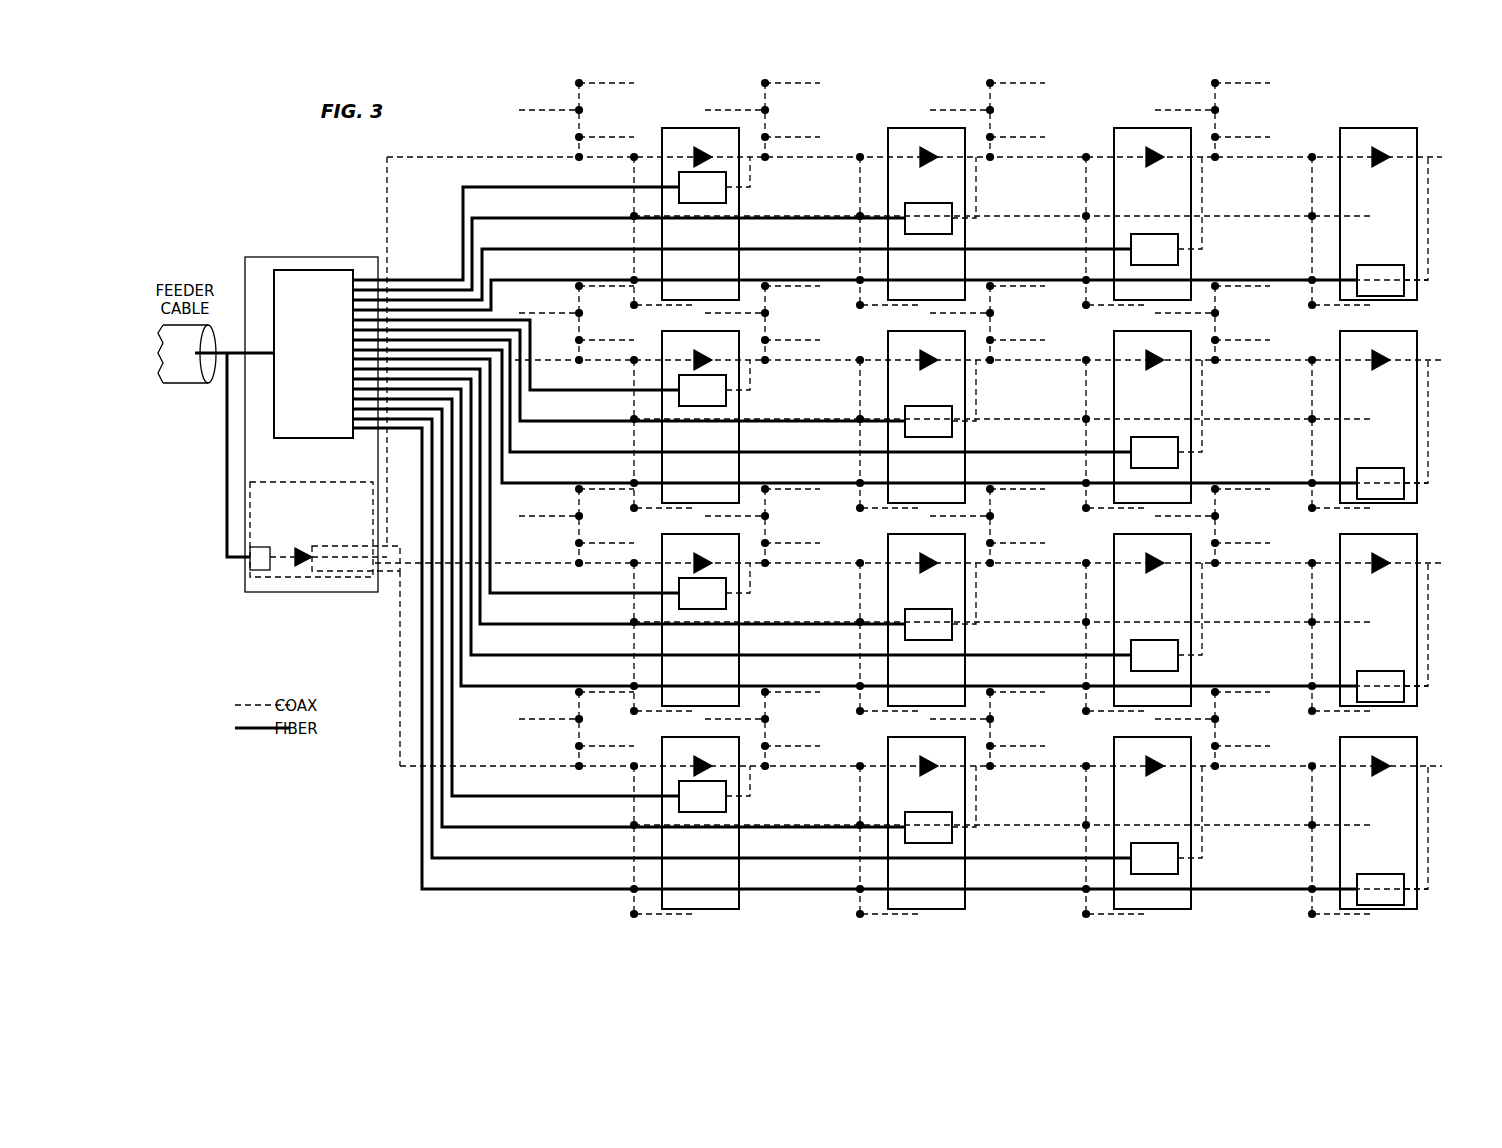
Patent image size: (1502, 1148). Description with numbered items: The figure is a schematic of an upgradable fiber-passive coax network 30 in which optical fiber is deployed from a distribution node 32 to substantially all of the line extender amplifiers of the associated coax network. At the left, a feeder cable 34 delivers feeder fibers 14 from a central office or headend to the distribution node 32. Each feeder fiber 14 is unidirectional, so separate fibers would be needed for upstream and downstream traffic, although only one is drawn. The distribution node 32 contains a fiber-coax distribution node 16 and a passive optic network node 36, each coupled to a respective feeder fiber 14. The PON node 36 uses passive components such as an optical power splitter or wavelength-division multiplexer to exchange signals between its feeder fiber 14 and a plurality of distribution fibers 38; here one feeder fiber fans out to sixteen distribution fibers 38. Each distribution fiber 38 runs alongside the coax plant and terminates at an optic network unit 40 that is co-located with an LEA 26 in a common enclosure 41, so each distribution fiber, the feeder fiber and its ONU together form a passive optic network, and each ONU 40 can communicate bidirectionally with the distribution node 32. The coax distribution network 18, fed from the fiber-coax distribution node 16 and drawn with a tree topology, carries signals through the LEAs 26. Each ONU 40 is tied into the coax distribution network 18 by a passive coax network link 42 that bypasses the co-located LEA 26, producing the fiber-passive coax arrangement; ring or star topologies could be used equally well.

The feeder fiber 14 is at (254, 350).
The fiber-coax distribution node 16 is at (292, 580).
The coax distribution network 18 is at (388, 607).
The LEA 26 is at (702, 149).
The fiber-passive coax network 30 is at (326, 201).
The distribution node 32 is at (262, 261).
The feeder cable 34 is at (206, 388).
The PON node 36 is at (293, 440).
The distribution fiber 38 is at (491, 270).
The optic network unit 40 is at (727, 195).
The common enclosure 41 is at (740, 234).
The passive coax network link 42 is at (752, 172).